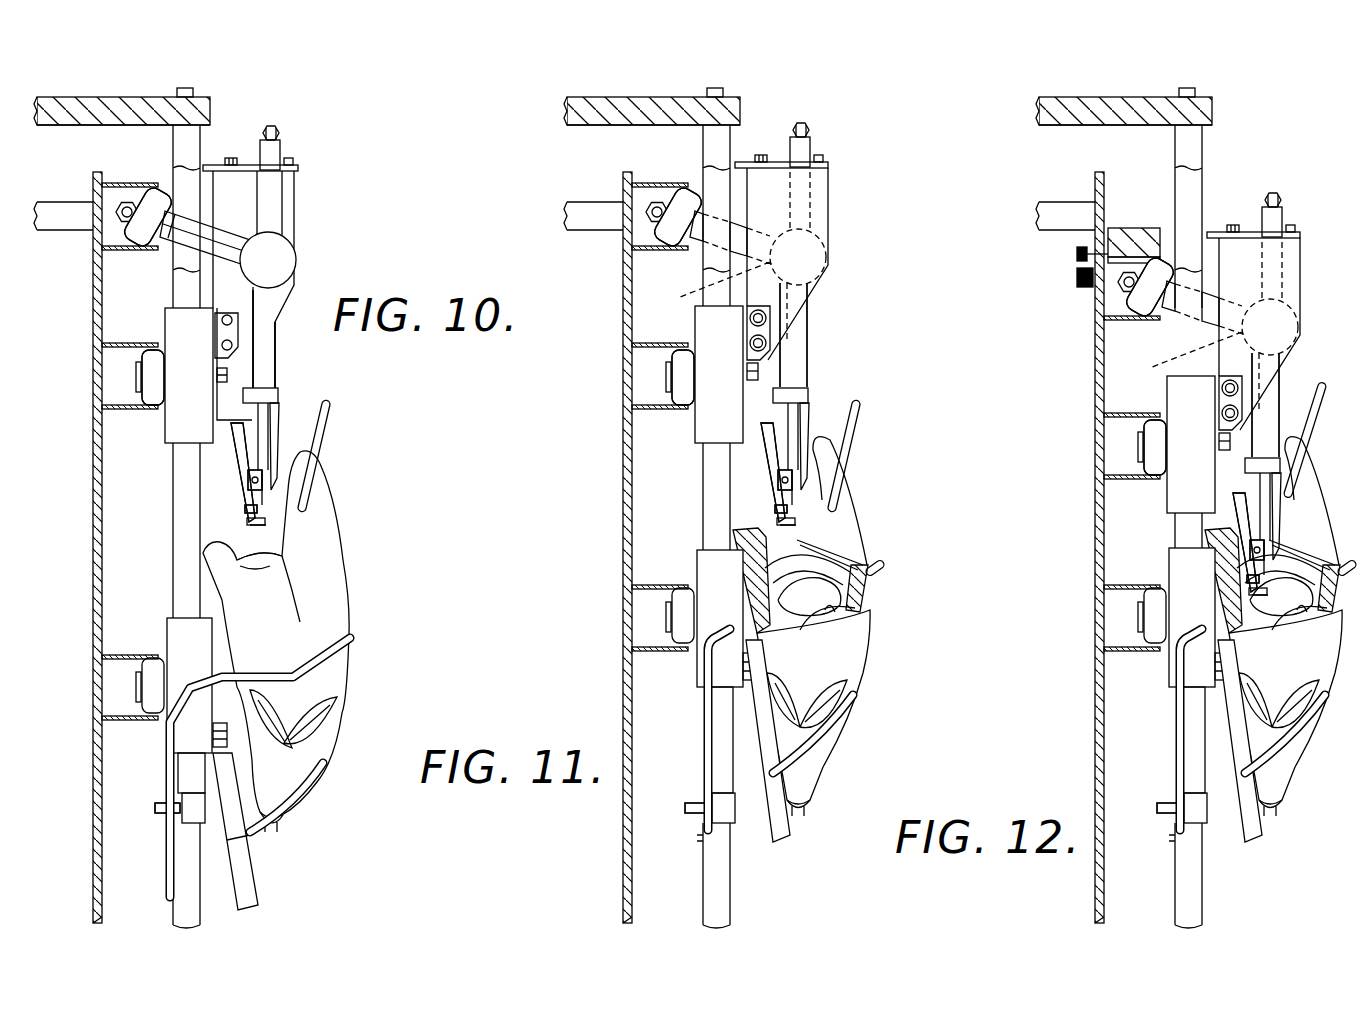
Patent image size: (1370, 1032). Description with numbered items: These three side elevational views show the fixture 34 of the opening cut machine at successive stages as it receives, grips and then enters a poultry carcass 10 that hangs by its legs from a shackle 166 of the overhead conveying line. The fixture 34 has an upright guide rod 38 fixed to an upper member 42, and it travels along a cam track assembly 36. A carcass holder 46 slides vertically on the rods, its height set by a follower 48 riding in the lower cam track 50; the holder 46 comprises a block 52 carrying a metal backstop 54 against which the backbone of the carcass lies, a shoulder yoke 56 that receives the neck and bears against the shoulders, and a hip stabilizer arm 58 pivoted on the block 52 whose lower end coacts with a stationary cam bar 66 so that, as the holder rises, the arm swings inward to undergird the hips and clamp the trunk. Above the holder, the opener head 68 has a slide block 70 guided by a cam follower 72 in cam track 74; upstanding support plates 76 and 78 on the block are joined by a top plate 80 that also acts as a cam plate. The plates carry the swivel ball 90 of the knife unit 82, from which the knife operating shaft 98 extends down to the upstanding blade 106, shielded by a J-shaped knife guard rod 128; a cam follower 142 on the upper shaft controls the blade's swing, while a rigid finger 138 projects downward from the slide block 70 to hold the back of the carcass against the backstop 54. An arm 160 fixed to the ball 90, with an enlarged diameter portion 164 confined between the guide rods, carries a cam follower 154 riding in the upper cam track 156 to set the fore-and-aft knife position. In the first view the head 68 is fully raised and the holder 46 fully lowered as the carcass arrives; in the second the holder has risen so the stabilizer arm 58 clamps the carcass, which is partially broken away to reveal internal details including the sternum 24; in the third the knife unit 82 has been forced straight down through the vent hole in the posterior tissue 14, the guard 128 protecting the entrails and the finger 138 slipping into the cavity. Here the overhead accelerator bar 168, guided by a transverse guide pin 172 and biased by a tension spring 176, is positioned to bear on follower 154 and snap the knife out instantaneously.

In FIG. 10, the poultry carcass 10 is at (350, 605).
In FIG. 11, the poultry carcass 10 is at (848, 626).
In FIG. 12, the poultry carcass 10 is at (1286, 626).
In FIG. 11, the posterior tissue 14 is at (815, 570).
In FIG. 12, the posterior tissue 14 is at (1283, 567).
In FIG. 11, the sternum 24 is at (892, 573).
In FIG. 12, the sternum 24 is at (1343, 570).
In FIG. 10, the fixture 34 is at (222, 86).
In FIG. 11, the fixture 34 is at (692, 91).
In FIG. 12, the fixture 34 is at (1164, 91).
In FIG. 10, the cam track assembly 36 is at (78, 188).
In FIG. 11, the cam track assembly 36 is at (589, 538).
In FIG. 12, the cam track assembly 36 is at (1062, 538).
In FIG. 10, the upright guide rod 38 is at (188, 148).
In FIG. 11, the upright guide rod 38 is at (740, 513).
In FIG. 12, the upright guide rod 38 is at (1212, 513).
In FIG. 10, the upper member 42 is at (105, 103).
In FIG. 11, the upper member 42 is at (651, 94).
In FIG. 12, the upper member 42 is at (1123, 94).
In FIG. 10, the carcass holder 46 is at (132, 653).
In FIG. 11, the carcass holder 46 is at (661, 588).
In FIG. 12, the carcass holder 46 is at (1131, 606).
In FIG. 10, the follower 48 is at (152, 703).
In FIG. 11, the follower 48 is at (639, 620).
In FIG. 12, the follower 48 is at (1109, 617).
In FIG. 10, the cam track 50 is at (122, 672).
In FIG. 11, the cam track 50 is at (633, 618).
In FIG. 12, the cam track 50 is at (1103, 616).
In FIG. 10, the block 52 is at (178, 645).
In FIG. 11, the block 52 is at (695, 616).
In FIG. 12, the block 52 is at (1169, 617).
In FIG. 10, the backstop 54 is at (222, 778).
In FIG. 11, the backstop 54 is at (706, 747).
In FIG. 12, the backstop 54 is at (1176, 747).
In FIG. 10, the shoulder yoke 56 is at (320, 805).
In FIG. 11, the shoulder yoke 56 is at (826, 741).
In FIG. 12, the shoulder yoke 56 is at (1278, 741).
In FIG. 10, the hip stabilizer arm 58 is at (340, 650).
In FIG. 11, the hip stabilizer arm 58 is at (686, 729).
In FIG. 12, the hip stabilizer arm 58 is at (1159, 729).
In FIG. 10, the cam bar 66 is at (160, 818).
In FIG. 11, the cam bar 66 is at (681, 836).
In FIG. 12, the cam bar 66 is at (1153, 835).
In FIG. 10, the opener head 68 is at (302, 235).
In FIG. 11, the opener head 68 is at (832, 235).
In FIG. 12, the opener head 68 is at (1264, 309).
In FIG. 10, the slide block 70 is at (180, 417).
In FIG. 11, the slide block 70 is at (712, 385).
In FIG. 12, the slide block 70 is at (1134, 444).
In FIG. 10, the cam follower 72 is at (135, 393).
In FIG. 11, the cam follower 72 is at (638, 377).
In FIG. 12, the cam follower 72 is at (1113, 447).
In FIG. 10, the cam track 74 is at (105, 345).
In FIG. 11, the cam track 74 is at (638, 355).
In FIG. 12, the cam track 74 is at (1108, 425).
In FIG. 11, the support plate 76 is at (825, 264).
In FIG. 12, the support plate 76 is at (1280, 334).
In FIG. 10, the support plate 78 is at (298, 208).
In FIG. 10, the top plate 80 is at (250, 165).
In FIG. 11, the top plate 80 is at (790, 125).
In FIG. 12, the top plate 80 is at (1252, 199).
In FIG. 10, the knife unit 82 is at (283, 352).
In FIG. 11, the knife unit 82 is at (844, 335).
In FIG. 12, the knife unit 82 is at (1229, 417).
In FIG. 10, the swivel ball 90 is at (288, 260).
In FIG. 11, the swivel ball 90 is at (824, 257).
In FIG. 12, the swivel ball 90 is at (1291, 327).
In FIG. 10, the knife operating shaft 98 is at (272, 333).
In FIG. 11, the knife operating shaft 98 is at (811, 335).
In FIG. 12, the knife operating shaft 98 is at (1228, 405).
In FIG. 10, the blade 106 is at (275, 492).
In FIG. 11, the blade 106 is at (849, 491).
In FIG. 12, the blade 106 is at (1308, 528).
In FIG. 10, the knife guard rod 128 is at (284, 437).
In FIG. 11, the knife guard rod 128 is at (840, 456).
In FIG. 12, the knife guard rod 128 is at (1293, 512).
In FIG. 10, the finger 138 is at (240, 478).
In FIG. 11, the finger 138 is at (723, 472).
In FIG. 12, the finger 138 is at (1185, 542).
In FIG. 10, the cam follower 142 is at (282, 150).
In FIG. 11, the cam follower 142 is at (841, 143).
In FIG. 12, the cam follower 142 is at (1260, 187).
In FIG. 10, the cam follower 154 is at (135, 228).
In FIG. 11, the cam follower 154 is at (635, 222).
In FIG. 12, the cam follower 154 is at (1104, 306).
In FIG. 10, the upper cam track 156 is at (113, 200).
In FIG. 11, the upper cam track 156 is at (668, 191).
In FIG. 12, the upper cam track 156 is at (1106, 291).
In FIG. 10, the arm 160 is at (225, 252).
In FIG. 11, the arm 160 is at (707, 265).
In FIG. 12, the arm 160 is at (1182, 324).
In FIG. 10, the enlarged diameter portion 164 is at (178, 246).
In FIG. 10, the shackle 166 is at (333, 412).
In FIG. 11, the shackle 166 is at (887, 441).
In FIG. 12, the shackle 166 is at (1313, 418).
In FIG. 12, the accelerator bar 168 is at (1134, 218).
In FIG. 12, the guide pin 172 is at (1046, 237).
In FIG. 12, the tension spring 176 is at (1046, 266).